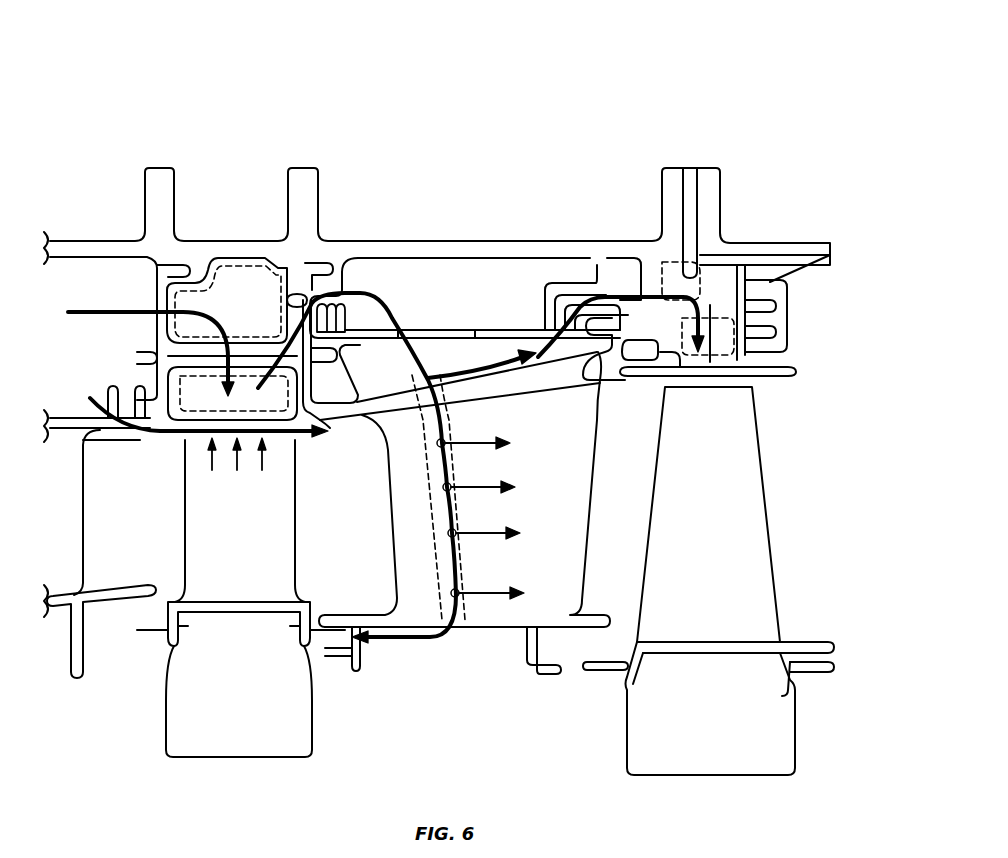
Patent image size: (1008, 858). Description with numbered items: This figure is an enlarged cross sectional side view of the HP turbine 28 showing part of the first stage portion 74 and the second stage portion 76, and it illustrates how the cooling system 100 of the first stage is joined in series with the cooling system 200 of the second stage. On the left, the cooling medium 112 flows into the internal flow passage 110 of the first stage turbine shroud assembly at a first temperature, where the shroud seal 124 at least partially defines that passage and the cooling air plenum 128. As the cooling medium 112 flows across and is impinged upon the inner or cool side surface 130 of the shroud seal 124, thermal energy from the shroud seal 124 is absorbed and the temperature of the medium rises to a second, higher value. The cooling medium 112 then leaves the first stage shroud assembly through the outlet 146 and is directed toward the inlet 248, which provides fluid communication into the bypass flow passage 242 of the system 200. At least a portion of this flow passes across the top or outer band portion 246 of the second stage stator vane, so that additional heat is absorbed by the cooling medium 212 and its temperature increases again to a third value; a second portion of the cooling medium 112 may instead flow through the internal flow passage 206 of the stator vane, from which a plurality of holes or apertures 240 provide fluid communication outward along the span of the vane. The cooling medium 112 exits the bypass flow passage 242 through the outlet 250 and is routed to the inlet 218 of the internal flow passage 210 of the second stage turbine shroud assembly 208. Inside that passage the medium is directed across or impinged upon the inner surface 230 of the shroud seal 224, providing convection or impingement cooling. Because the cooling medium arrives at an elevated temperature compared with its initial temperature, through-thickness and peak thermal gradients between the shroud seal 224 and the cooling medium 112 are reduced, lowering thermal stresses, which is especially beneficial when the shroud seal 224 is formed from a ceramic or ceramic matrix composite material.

The HP turbine 28 is at (540, 58).
The first stage portion 74 is at (215, 150).
The second stage portion 76 is at (564, 118).
The system for cooling a turbine engine 100 is at (110, 212).
The internal flow passage 110 is at (240, 268).
The cooling medium 112 is at (228, 340).
The shroud seal 124 is at (145, 432).
The cooling air plenum 128 is at (230, 409).
The inner or cool side surface 130 is at (262, 402).
The outlet 146 is at (298, 298).
The system for cooling a turbine of a gas turbine engine 200 is at (573, 192).
The internal flow passage 206 is at (465, 572).
The turbine shroud assembly 208 is at (688, 312).
The internal flow passage 210 is at (683, 270).
The cooling medium 212 is at (780, 206).
The inlet 218 is at (677, 167).
The shroud seal 224 is at (783, 378).
The inner surface 230 is at (668, 372).
The holes or apertures 240 is at (445, 488).
The bypass flow passage 242 is at (470, 348).
The top or outer band portion 246 is at (557, 374).
The inlet 248 is at (398, 335).
The outlet 250 is at (592, 370).